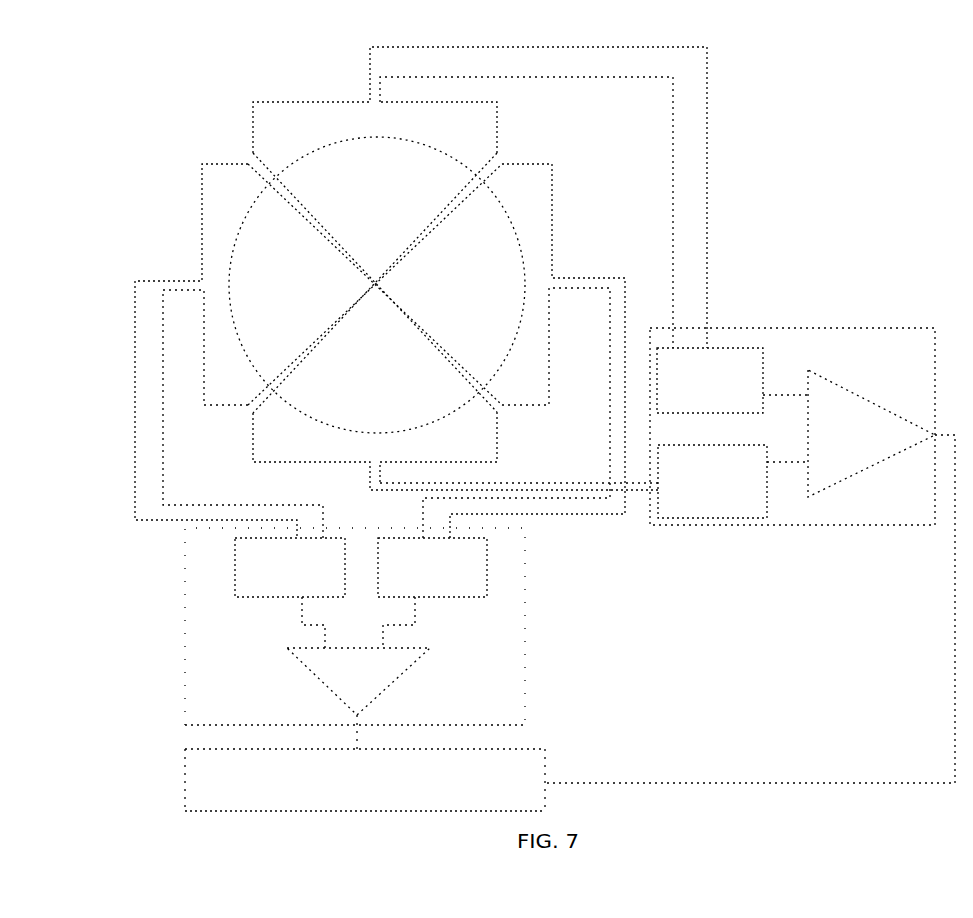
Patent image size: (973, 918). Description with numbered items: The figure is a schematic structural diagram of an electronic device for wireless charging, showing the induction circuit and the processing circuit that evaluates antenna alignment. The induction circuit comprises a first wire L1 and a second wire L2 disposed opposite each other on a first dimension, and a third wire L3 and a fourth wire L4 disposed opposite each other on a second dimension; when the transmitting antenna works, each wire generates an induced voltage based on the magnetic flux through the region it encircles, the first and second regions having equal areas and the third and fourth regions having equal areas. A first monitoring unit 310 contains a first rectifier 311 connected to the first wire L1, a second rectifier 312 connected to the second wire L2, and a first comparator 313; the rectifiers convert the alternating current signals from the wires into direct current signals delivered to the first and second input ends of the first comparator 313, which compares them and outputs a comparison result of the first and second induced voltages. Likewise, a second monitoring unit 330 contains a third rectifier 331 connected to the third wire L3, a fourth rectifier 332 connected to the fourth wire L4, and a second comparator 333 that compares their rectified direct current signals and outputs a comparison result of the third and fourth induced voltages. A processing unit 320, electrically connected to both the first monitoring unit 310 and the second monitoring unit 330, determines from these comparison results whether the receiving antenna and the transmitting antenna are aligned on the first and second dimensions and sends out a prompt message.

The first wire L1 is at (222, 161).
The second wire L2 is at (527, 160).
The third wire L3 is at (298, 102).
The fourth wire L4 is at (500, 433).
The first monitoring unit 310 is at (418, 626).
The first rectifier 311 is at (290, 567).
The second rectifier 312 is at (432, 567).
The first comparator 313 is at (358, 681).
The processing unit 320 is at (365, 780).
The second monitoring unit 330 is at (792, 385).
The third rectifier 331 is at (710, 380).
The fourth rectifier 332 is at (712, 481).
The second comparator 333 is at (871, 433).